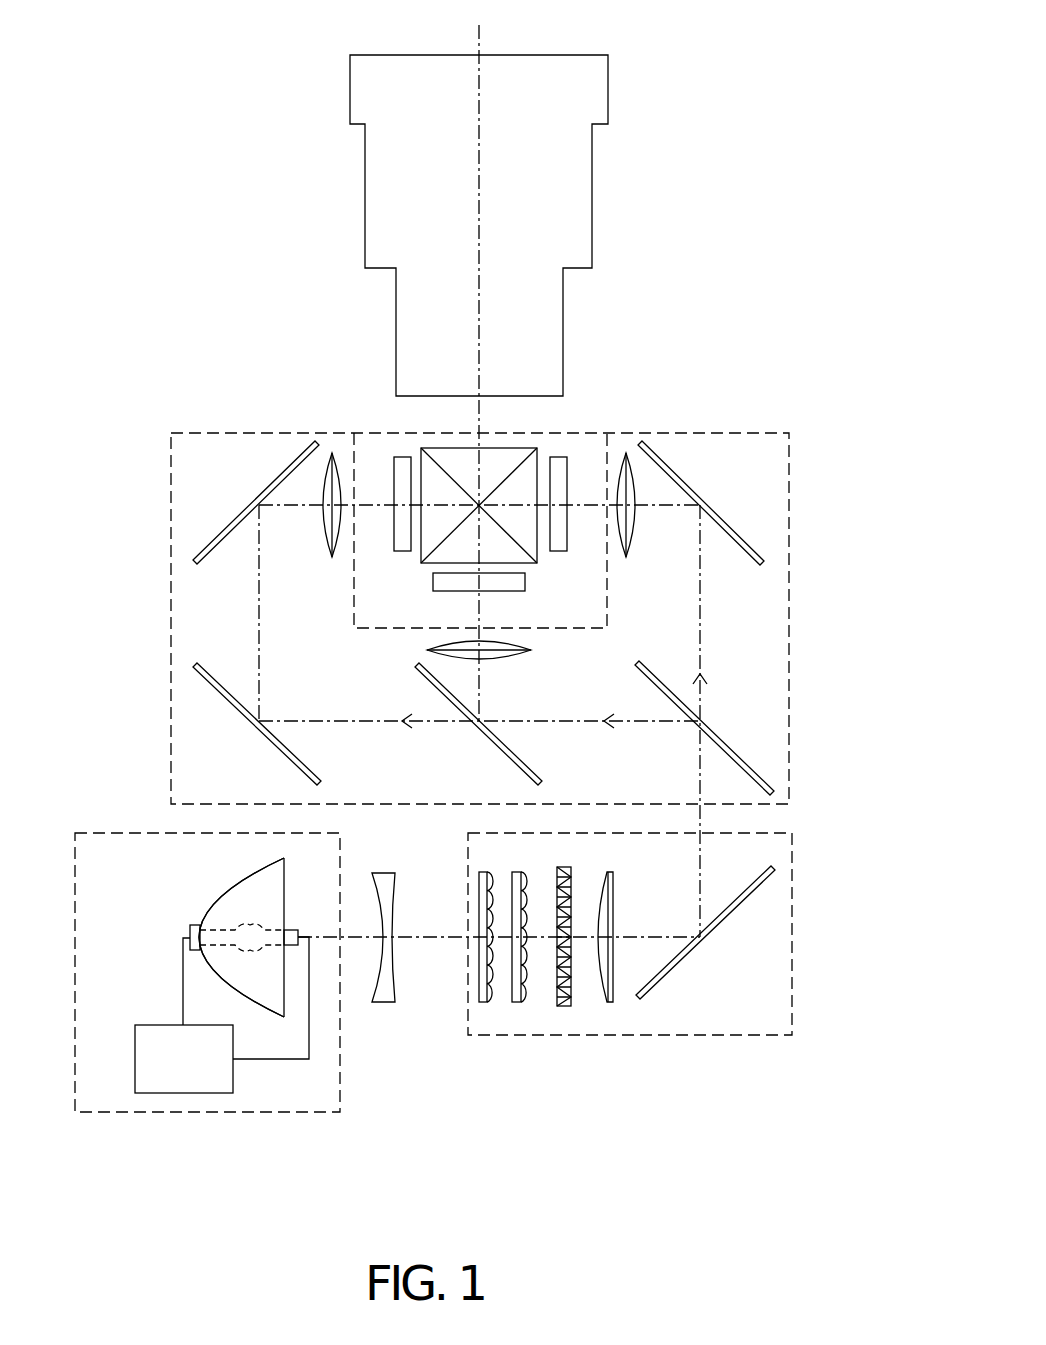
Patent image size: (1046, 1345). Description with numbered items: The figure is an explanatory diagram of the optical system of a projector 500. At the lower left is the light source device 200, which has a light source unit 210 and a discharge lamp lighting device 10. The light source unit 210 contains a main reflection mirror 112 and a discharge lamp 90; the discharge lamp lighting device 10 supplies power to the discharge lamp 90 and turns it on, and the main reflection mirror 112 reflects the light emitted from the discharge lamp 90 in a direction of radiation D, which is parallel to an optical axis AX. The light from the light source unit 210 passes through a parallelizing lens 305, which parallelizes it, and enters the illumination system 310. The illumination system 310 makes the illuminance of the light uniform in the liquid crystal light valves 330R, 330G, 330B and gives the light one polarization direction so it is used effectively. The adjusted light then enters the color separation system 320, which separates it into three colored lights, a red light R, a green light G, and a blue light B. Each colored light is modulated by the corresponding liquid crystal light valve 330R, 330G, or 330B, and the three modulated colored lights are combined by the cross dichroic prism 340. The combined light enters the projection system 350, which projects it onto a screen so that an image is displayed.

The projector 500 is at (696, 37).
The projection system 350 is at (592, 222).
The cross dichroic prism 340 is at (462, 448).
The liquid crystal light valve 330R is at (595, 425).
The liquid crystal light valve 330G is at (490, 592).
The liquid crystal light valve 330B is at (405, 552).
The color separation system 320 is at (789, 786).
The illumination system 310 is at (792, 995).
The parallelizing lens 305 is at (383, 1003).
The light source device 200 is at (170, 1112).
The light source unit 210 is at (176, 897).
The main reflection mirror 112 is at (213, 893).
The discharge lamp 90 is at (290, 930).
The discharge lamp lighting device 10 is at (150, 1025).
The optical axis AX is at (441, 938).
The direction of radiation D is at (313, 1133).
The red light R is at (703, 631).
The green light G is at (483, 664).
The blue light B is at (257, 637).